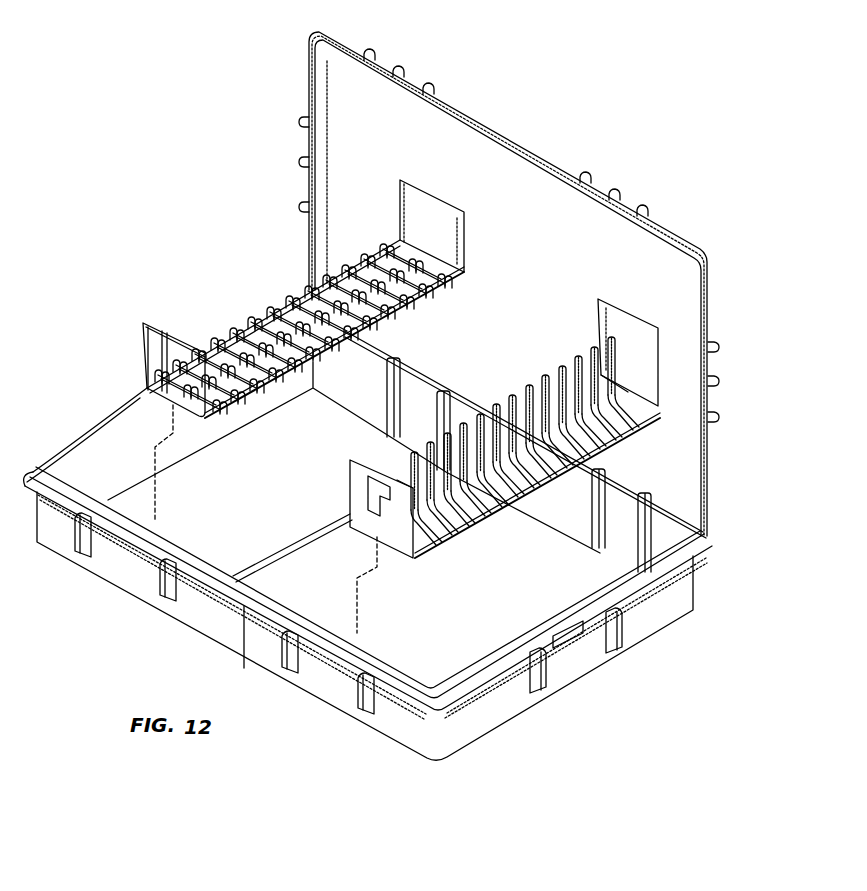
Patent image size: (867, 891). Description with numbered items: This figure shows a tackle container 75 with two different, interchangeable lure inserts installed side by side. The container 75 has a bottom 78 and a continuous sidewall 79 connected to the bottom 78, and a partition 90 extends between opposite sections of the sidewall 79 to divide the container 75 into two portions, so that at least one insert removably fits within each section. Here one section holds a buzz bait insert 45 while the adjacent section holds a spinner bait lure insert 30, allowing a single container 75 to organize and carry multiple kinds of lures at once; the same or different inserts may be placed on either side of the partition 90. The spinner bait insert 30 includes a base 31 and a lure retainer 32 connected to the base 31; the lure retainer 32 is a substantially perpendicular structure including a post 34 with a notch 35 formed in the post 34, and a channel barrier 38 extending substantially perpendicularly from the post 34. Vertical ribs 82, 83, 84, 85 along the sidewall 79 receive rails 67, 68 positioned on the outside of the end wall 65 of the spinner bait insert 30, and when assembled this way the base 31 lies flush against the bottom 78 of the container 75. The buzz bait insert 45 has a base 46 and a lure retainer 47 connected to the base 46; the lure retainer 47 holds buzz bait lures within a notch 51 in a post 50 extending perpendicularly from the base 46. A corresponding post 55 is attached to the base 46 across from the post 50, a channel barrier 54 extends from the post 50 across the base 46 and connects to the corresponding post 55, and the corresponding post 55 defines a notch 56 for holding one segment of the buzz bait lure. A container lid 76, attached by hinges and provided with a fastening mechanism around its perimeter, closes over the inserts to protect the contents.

The spinner bait lure insert 30 is at (648, 364).
The base 31 is at (490, 505).
The lure retainer 32 is at (591, 350).
The post 34 is at (544, 378).
The notch 35 is at (575, 360).
The channel barrier 38 is at (609, 340).
The buzz bait insert 45 is at (160, 330).
The base 46 is at (292, 312).
The lure retainer 47 is at (268, 322).
The post 50 is at (300, 300).
The notch 51 is at (305, 295).
The channel barrier 54 is at (226, 350).
The corresponding post 55 is at (393, 309).
The notch 56 is at (428, 298).
The end wall 65 is at (360, 492).
The rail 67 is at (350, 470).
The rail 68 is at (402, 478).
The container 75 is at (100, 455).
The container lid 76 is at (490, 160).
The bottom 78 is at (251, 516).
The sidewall 79 is at (492, 712).
The vertical rib 82 is at (343, 641).
The vertical rib 83 is at (372, 650).
The vertical rib 84 is at (373, 661).
The vertical rib 85 is at (392, 672).
The partition 90 is at (314, 584).